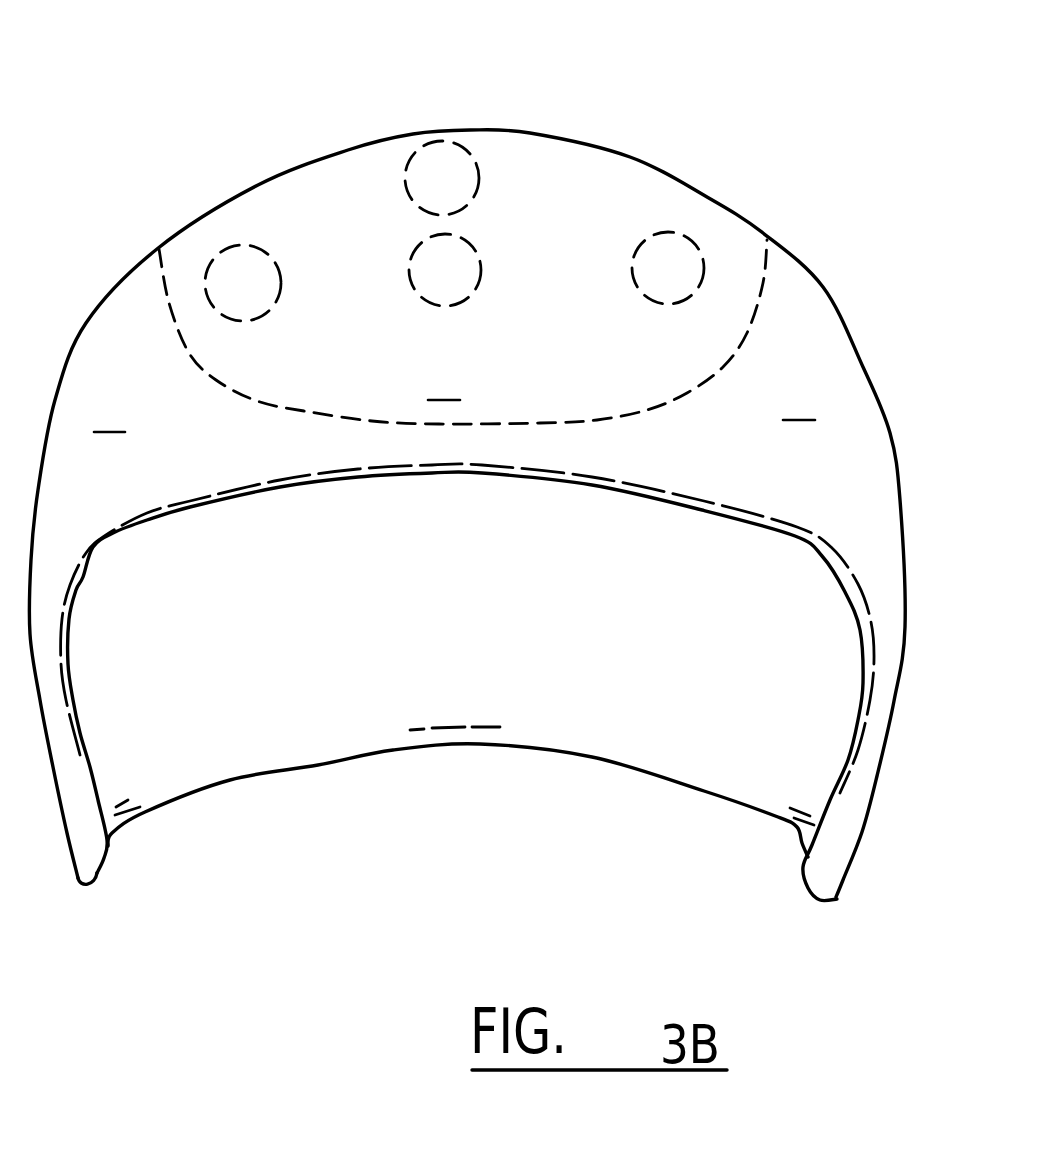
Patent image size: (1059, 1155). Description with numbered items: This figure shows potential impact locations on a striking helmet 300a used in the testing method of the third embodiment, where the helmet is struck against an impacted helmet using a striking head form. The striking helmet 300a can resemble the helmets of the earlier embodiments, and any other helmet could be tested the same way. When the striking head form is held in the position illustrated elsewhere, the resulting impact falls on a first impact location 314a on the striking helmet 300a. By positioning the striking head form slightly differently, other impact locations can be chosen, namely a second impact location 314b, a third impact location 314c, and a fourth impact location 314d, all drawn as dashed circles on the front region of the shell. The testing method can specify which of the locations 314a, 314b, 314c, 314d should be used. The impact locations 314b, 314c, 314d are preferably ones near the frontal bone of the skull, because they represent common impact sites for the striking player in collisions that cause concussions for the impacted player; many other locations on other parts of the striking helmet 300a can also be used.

The striking helmet 300a is at (570, 85).
The first impact location 314a is at (467, 293).
The second impact location 314b is at (477, 190).
The third impact location 314c is at (267, 309).
The fourth impact location 314d is at (690, 222).